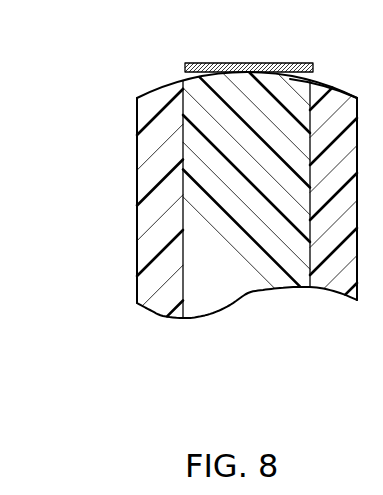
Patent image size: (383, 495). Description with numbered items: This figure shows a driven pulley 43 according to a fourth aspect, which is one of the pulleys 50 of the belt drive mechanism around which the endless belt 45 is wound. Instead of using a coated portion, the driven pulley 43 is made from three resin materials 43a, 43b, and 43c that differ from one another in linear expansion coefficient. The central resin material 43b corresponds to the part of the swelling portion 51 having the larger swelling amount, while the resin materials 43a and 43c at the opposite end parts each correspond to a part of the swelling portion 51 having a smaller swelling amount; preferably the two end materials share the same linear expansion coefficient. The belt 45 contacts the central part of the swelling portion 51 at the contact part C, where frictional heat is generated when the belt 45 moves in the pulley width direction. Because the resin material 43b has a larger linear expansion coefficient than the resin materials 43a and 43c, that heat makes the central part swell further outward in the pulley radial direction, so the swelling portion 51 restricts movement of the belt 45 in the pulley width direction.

The driven pulley 43 is at (194, 224).
The pulley 50 is at (137, 147).
The resin material 43a is at (165, 306).
The resin material 43b is at (257, 288).
The resin material 43c is at (337, 288).
The belt 45 is at (249, 45).
The swelling portion 51 is at (323, 86).
The contact part C is at (257, 63).